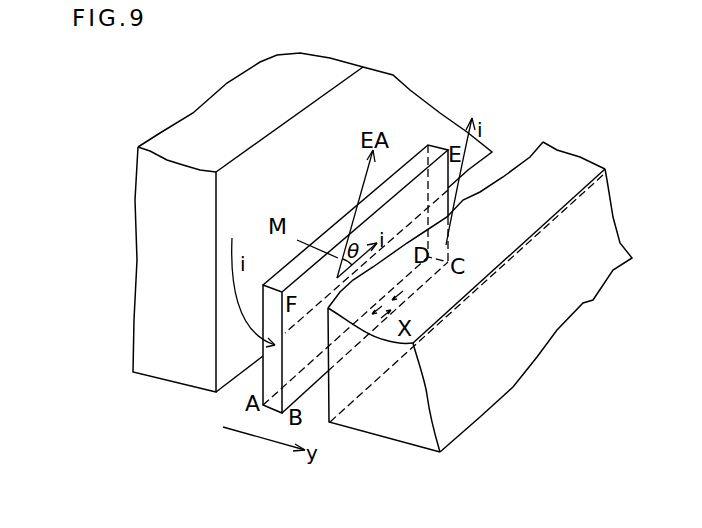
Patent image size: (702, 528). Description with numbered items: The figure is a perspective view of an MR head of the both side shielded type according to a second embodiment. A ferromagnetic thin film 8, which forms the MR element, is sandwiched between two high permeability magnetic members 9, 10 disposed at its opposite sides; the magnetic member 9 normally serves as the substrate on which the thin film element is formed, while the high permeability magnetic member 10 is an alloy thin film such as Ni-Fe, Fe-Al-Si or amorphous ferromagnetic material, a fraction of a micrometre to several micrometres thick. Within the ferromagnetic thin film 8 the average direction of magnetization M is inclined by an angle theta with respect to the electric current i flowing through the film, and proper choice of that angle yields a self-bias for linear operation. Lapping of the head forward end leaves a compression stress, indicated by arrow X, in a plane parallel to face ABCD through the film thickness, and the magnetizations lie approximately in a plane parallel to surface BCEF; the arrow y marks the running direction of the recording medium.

The ferromagnetic thin film 8 is at (410, 170).
The magnetic member 9 is at (243, 157).
The high permeability magnetic member 10 is at (397, 420).